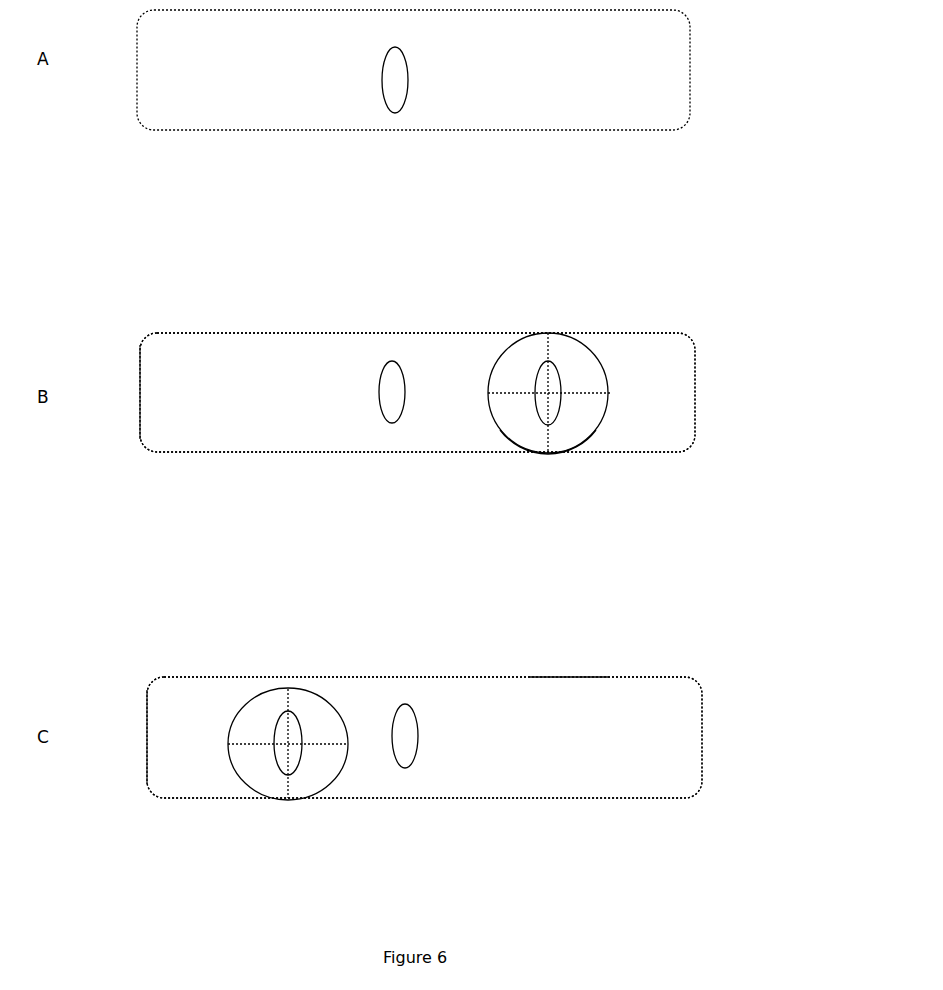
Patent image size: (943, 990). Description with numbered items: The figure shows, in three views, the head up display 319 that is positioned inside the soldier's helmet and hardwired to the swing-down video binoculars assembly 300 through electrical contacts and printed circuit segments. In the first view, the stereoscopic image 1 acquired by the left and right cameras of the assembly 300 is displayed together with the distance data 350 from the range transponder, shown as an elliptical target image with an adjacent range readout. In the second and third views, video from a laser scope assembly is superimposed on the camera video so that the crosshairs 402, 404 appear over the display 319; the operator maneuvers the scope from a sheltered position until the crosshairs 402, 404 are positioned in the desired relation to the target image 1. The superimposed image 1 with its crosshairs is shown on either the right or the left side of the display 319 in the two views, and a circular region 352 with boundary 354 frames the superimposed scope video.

In FIG. 6A, the stereoscopic image signal 1 is at (397, 85).
In FIG. 6B, the stereoscopic image signal 1 is at (540, 393).
In FIG. 6C, the stereoscopic image signal 1 is at (397, 770).
In FIG. 6B, the swing-down video binoculars assembly 300 is at (685, 435).
In FIG. 6C, the swing-down video binoculars assembly 300 is at (678, 770).
In FIG. 6A, the head up display 319 is at (678, 71).
In FIG. 6B, the head up display 319 is at (675, 377).
In FIG. 6C, the head up display 319 is at (658, 714).
In FIG. 6A, the distance data 350 is at (537, 115).
In FIG. 6B, the distance data 350 is at (520, 435).
In FIG. 6C, the distance data 350 is at (268, 793).
In FIG. 6B, the circular scan region 352 is at (575, 348).
In FIG. 6C, the circular scan region 352 is at (240, 705).
In FIG. 6B, the scan region boundary 354 is at (565, 450).
In FIG. 6C, the scan region boundary 354 is at (567, 677).
In FIG. 6B, the crosshair 402 is at (575, 400).
In FIG. 6C, the crosshair 404 is at (315, 743).